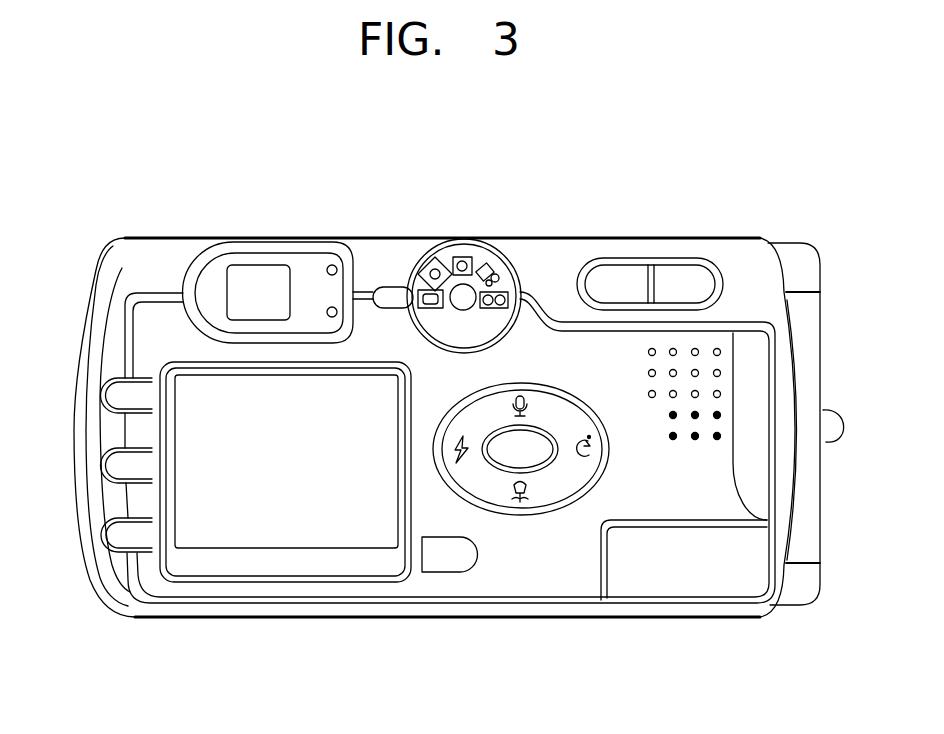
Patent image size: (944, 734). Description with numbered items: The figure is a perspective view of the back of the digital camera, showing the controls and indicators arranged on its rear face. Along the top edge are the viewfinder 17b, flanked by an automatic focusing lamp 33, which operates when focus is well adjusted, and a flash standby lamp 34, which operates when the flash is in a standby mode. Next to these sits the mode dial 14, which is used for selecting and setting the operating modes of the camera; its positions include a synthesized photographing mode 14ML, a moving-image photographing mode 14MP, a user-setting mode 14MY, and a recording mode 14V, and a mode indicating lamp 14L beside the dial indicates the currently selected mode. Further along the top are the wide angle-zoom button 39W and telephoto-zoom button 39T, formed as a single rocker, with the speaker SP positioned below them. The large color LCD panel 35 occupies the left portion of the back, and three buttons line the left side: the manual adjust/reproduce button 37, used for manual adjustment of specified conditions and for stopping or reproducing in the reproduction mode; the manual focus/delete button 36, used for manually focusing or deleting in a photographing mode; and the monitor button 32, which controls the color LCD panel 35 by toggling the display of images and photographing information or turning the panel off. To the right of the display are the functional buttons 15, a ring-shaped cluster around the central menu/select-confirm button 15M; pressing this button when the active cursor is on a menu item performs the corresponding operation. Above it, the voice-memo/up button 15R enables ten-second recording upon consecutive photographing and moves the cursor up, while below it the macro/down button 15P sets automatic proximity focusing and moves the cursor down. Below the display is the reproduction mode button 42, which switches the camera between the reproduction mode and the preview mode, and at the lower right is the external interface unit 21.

The viewfinder 17b is at (258, 272).
The automatic focusing lamp 33 is at (329, 265).
The flash standby lamp 34 is at (337, 310).
The mode dial 14 is at (474, 270).
The mode indicating lamp 14L is at (392, 298).
The moving-image photographing mode 14MP is at (493, 267).
The recording mode 14V is at (503, 290).
The synthesized photographing mode 14ML is at (427, 302).
The user-setting mode 14MY is at (503, 330).
The wide angle-zoom button 39W is at (615, 283).
The telephoto-zoom button 39T is at (687, 280).
The speaker SP is at (720, 418).
The color LCD panel 35 is at (280, 525).
The manual adjust/reproduce button 37 is at (115, 393).
The manual focus/delete button 36 is at (115, 466).
The monitor button 32 is at (118, 535).
The functional buttons 15 is at (536, 516).
The voice-memo/up button 15R is at (508, 403).
The menu/select-confirm button 15M is at (542, 453).
The macro/down button 15P is at (537, 488).
The reproduction mode button 42 is at (440, 560).
The external interface unit 21 is at (730, 578).